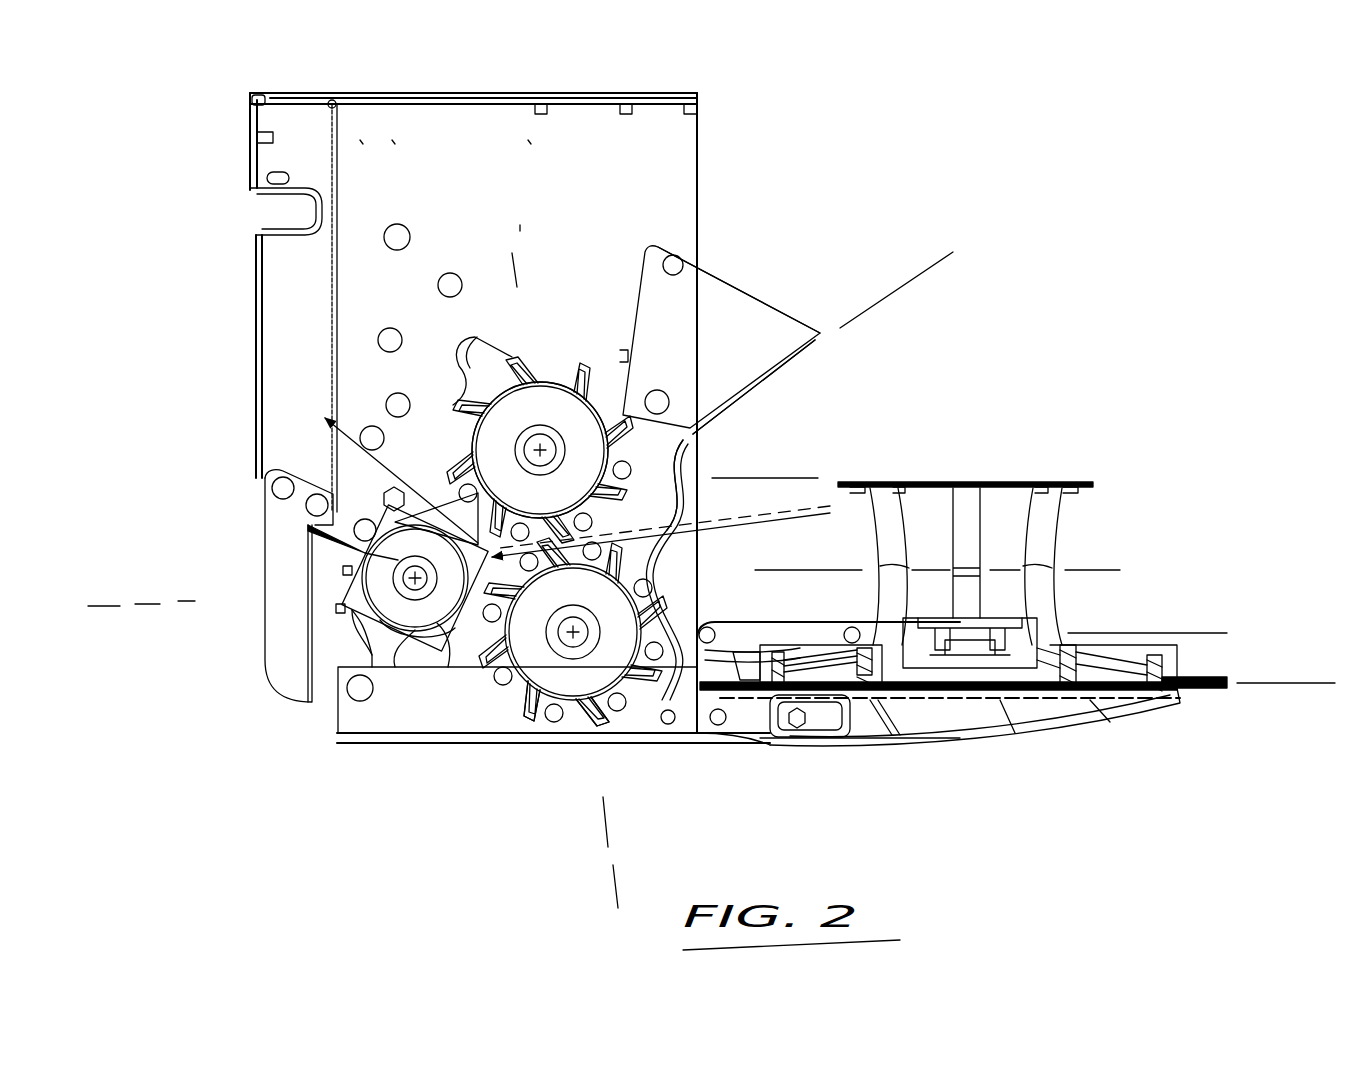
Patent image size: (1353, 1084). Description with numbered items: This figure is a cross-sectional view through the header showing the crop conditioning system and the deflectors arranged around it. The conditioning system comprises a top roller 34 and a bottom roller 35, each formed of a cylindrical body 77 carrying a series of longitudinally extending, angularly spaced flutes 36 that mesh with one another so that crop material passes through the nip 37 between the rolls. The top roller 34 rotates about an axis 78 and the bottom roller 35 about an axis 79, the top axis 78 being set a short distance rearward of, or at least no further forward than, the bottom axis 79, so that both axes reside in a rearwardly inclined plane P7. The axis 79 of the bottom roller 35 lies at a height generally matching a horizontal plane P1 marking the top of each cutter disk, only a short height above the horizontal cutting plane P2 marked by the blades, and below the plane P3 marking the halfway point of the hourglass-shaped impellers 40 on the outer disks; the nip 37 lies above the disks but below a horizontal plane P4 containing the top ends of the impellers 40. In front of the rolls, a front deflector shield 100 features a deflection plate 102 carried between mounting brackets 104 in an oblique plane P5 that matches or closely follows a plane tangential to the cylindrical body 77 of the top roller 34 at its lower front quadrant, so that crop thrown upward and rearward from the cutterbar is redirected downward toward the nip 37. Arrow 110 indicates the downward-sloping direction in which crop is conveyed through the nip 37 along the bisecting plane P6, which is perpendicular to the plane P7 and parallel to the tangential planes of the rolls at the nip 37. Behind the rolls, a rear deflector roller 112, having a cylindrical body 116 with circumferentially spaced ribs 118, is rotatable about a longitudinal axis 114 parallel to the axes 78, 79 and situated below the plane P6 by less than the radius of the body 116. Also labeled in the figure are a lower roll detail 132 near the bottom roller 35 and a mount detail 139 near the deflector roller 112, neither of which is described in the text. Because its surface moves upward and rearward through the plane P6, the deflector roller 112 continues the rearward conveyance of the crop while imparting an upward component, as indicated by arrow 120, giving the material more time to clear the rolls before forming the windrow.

The top roller 34 is at (573, 353).
The bottom roller 35 is at (510, 700).
The flutes 36 is at (622, 484).
The nip 37 is at (587, 531).
The impellers 40 is at (1067, 528).
The cylindrical body 77 is at (472, 362).
The axis of top roller 78 is at (515, 452).
The axis of bottom roller 79 is at (575, 645).
The front deflector shield 100 is at (802, 365).
The deflection plate 102 is at (772, 384).
The mounting brackets 104 is at (735, 283).
The arrow indicating crop conveyance direction 110 is at (707, 570).
The rear deflector roller 112 is at (458, 636).
The longitudinal axis of deflector roller 114 is at (345, 570).
The cylindrical body of deflector roller 116 is at (403, 660).
The ribs 118 is at (368, 622).
The arrow indicating upward deflection direction 120 is at (328, 398).
The roller gear tooth 132 is at (548, 705).
The lower mount tab 139 is at (340, 608).
The horizontal plane marking top of each disk P1 is at (1180, 630).
The horizontal cutting plane P2 is at (1280, 676).
The plane marking halfway point of impeller height P3 is at (830, 530).
The horizontal plane containing top ends of impellers P4 is at (772, 470).
The oblique plane P5 is at (905, 280).
The bisecting plane P6 is at (190, 590).
The rearwardly inclined plane P7 is at (612, 890).